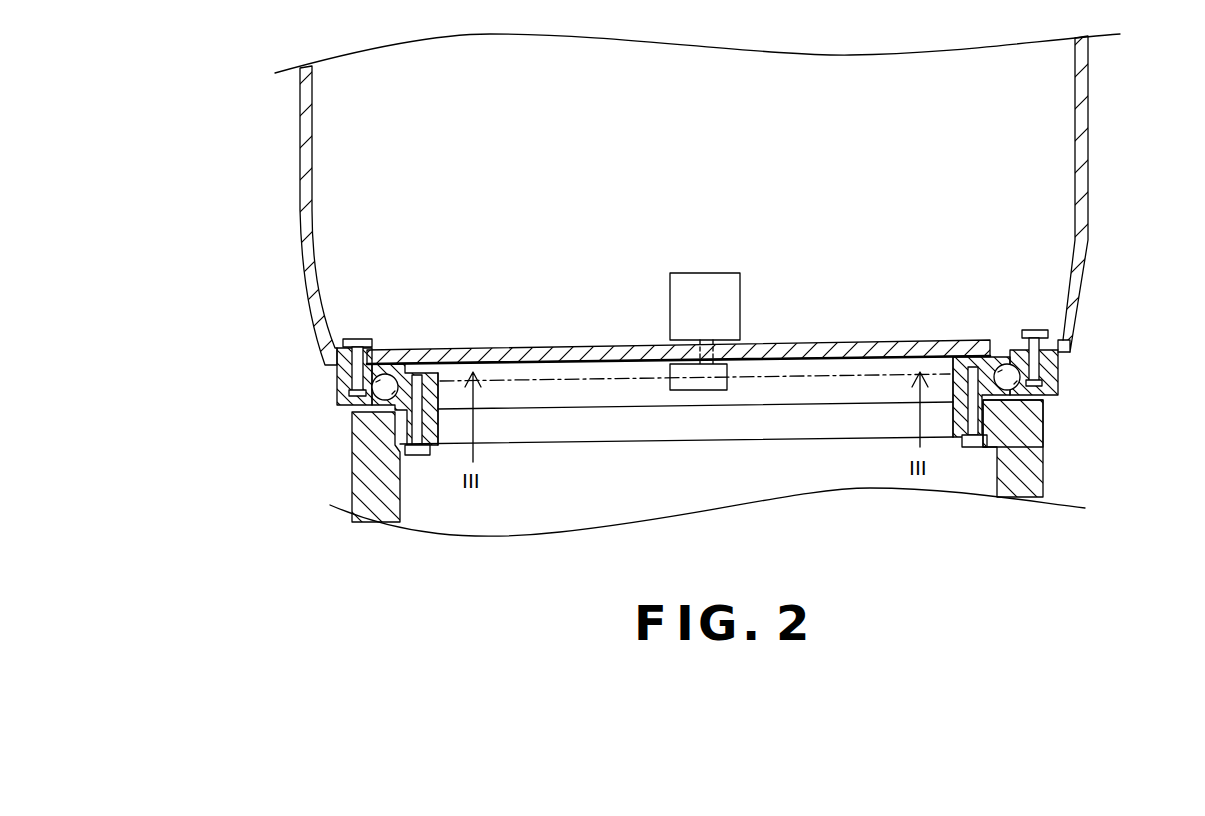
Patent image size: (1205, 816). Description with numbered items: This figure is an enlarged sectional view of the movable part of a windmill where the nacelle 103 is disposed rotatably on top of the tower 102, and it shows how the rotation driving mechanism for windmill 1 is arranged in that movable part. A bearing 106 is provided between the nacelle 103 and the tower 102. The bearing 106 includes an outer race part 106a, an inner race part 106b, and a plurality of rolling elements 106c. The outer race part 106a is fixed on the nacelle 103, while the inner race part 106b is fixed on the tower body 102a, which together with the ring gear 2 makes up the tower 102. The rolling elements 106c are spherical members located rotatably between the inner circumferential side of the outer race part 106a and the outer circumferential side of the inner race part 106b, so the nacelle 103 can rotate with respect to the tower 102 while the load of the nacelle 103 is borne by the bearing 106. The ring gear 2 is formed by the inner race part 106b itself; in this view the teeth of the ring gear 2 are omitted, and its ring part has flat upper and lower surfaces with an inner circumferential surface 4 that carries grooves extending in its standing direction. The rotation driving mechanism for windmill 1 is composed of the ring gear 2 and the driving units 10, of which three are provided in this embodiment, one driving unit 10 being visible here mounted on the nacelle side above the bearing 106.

The nacelle 103 is at (1118, 158).
The driving unit 10 is at (614, 296).
The bearing 106 is at (310, 400).
The outer race part 106a is at (337, 383).
The inner race part 106b is at (433, 362).
The ring gear 2 is at (773, 340).
The rolling element 106c is at (400, 350).
The inner circumferential surface 4 is at (597, 398).
The rotation driving mechanism for windmill 1 is at (716, 421).
The tower 102 is at (1058, 467).
The tower body 102a is at (1035, 413).